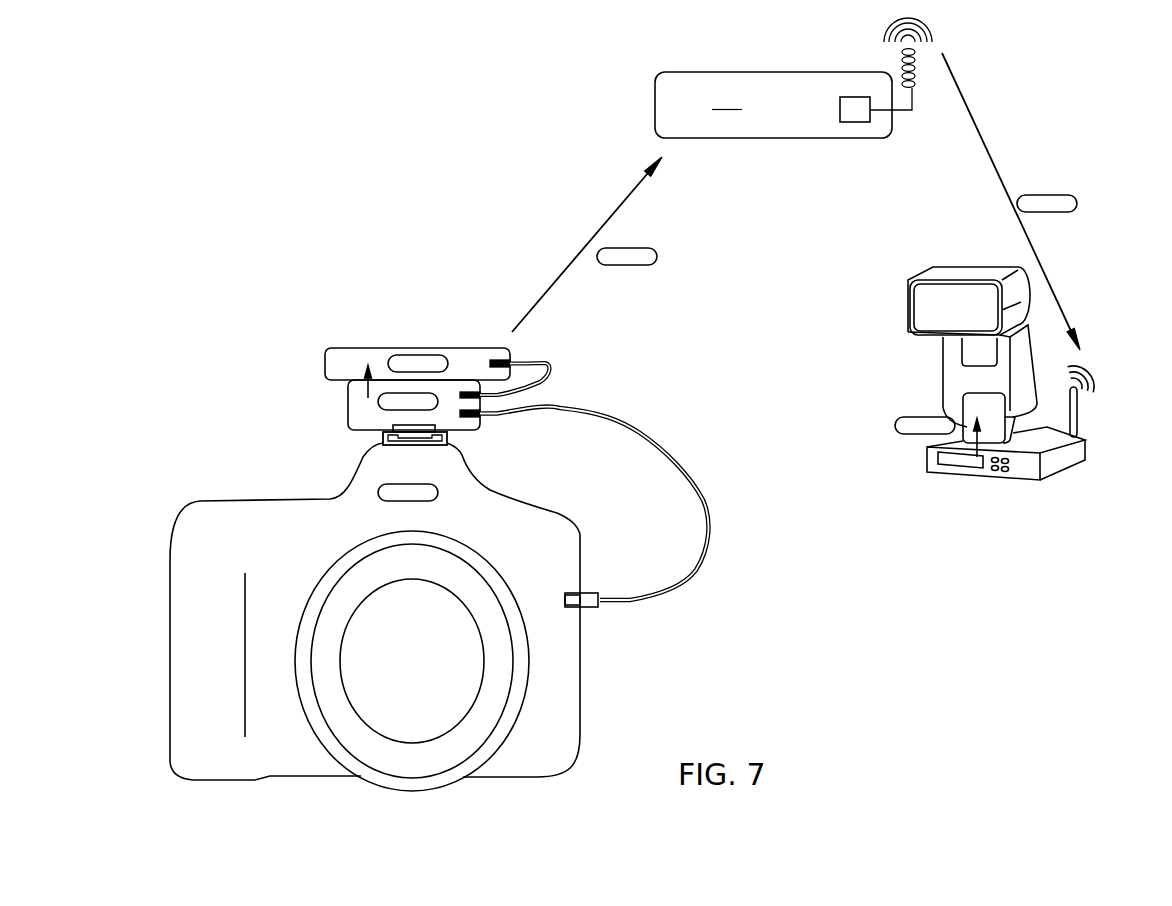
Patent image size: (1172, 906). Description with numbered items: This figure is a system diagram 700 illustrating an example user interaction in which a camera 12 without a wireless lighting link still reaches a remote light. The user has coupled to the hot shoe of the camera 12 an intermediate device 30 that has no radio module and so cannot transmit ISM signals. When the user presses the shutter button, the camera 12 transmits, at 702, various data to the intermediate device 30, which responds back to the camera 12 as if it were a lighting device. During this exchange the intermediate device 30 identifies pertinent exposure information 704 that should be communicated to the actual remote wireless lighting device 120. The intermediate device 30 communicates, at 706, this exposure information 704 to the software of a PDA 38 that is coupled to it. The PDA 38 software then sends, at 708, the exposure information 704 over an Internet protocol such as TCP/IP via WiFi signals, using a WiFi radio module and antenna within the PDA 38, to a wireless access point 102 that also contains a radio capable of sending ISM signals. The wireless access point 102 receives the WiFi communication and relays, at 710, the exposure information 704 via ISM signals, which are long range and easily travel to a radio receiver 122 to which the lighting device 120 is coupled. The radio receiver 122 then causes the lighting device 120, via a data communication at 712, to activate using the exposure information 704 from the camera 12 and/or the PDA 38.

The camera system 700 is at (333, 119).
The camera 12 is at (582, 720).
The intermediate device 30 is at (482, 429).
The PDA 38 is at (478, 346).
The wireless access point 102 is at (793, 78).
The remote wireless lighting device 120 is at (943, 377).
The radio receiver 122 is at (1085, 453).
The camera data transmission 702 is at (383, 441).
The exposure information 704 is at (397, 353).
The communication of exposure information to PDA 706 is at (360, 385).
The WiFi transmission to access point 708 is at (618, 210).
The ISM relay of exposure information 710 is at (991, 158).
The data communication to lighting device 712 is at (945, 448).